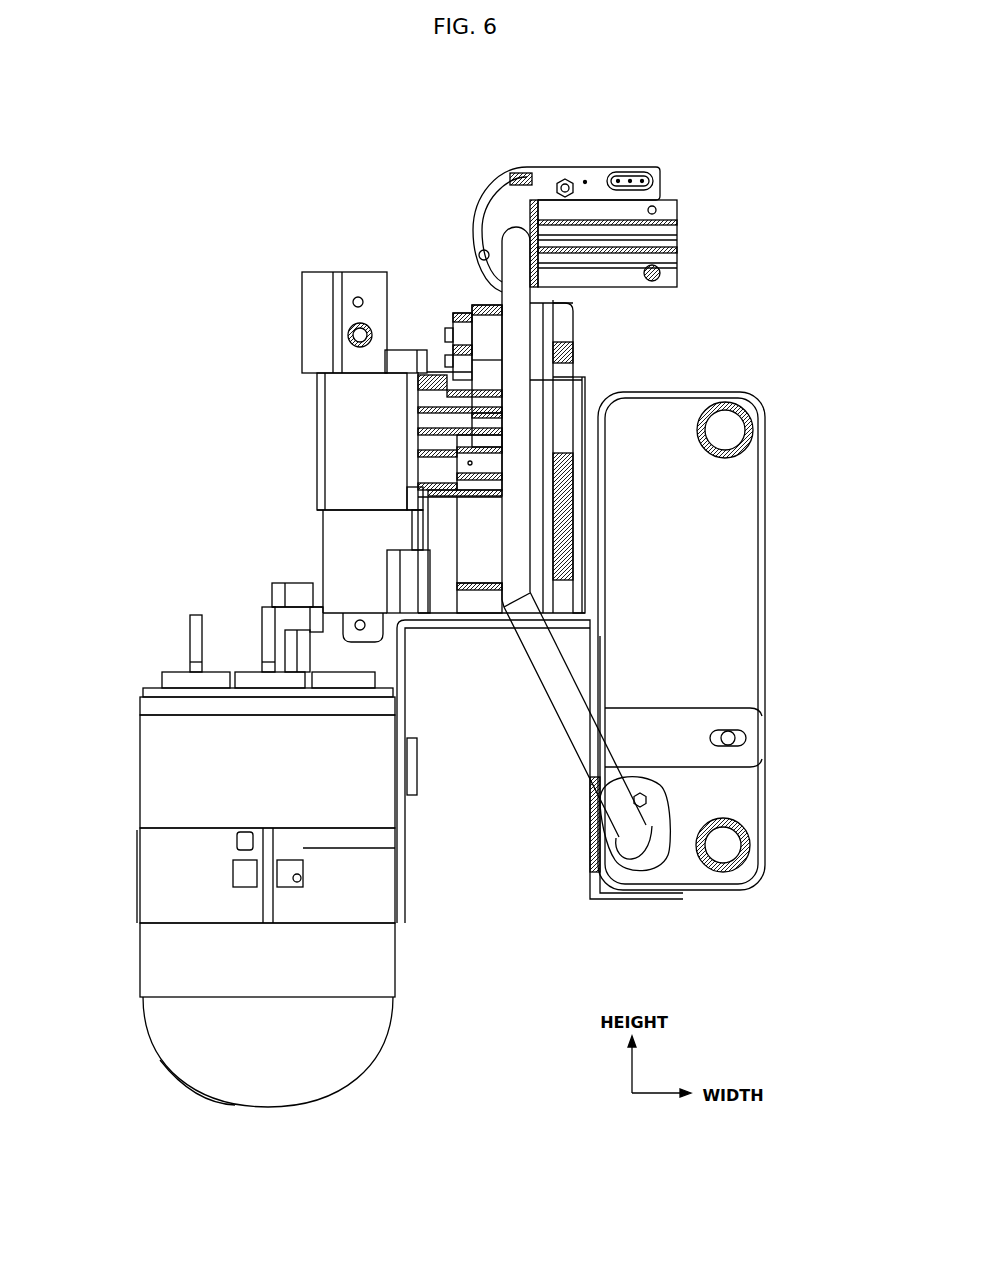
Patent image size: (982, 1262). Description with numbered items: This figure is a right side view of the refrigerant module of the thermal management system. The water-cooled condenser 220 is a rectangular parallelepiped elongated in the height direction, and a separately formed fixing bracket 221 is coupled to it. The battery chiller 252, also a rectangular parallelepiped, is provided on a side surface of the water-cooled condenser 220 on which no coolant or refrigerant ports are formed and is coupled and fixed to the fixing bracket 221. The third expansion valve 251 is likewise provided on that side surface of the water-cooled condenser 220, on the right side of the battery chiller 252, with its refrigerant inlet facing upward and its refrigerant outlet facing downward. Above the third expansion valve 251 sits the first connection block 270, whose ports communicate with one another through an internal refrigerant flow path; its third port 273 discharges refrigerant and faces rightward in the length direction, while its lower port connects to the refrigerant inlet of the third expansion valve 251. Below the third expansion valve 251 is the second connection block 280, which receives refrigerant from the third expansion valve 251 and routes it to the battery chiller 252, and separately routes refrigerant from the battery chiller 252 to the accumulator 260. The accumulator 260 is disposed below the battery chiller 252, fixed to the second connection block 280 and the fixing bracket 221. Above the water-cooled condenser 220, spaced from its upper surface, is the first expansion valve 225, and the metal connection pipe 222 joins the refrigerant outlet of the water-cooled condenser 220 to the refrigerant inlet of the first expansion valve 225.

The water-cooled condenser 220 is at (742, 553).
The fixing bracket 221 is at (590, 840).
The connection pipe 222 is at (574, 712).
The first expansion valve 225 is at (572, 168).
The third expansion valve 251 is at (393, 387).
The battery chiller 252 is at (606, 503).
The accumulator 260 is at (165, 952).
The first connection block 270 is at (363, 278).
The third port 273 is at (337, 300).
The second connection block 280 is at (350, 537).